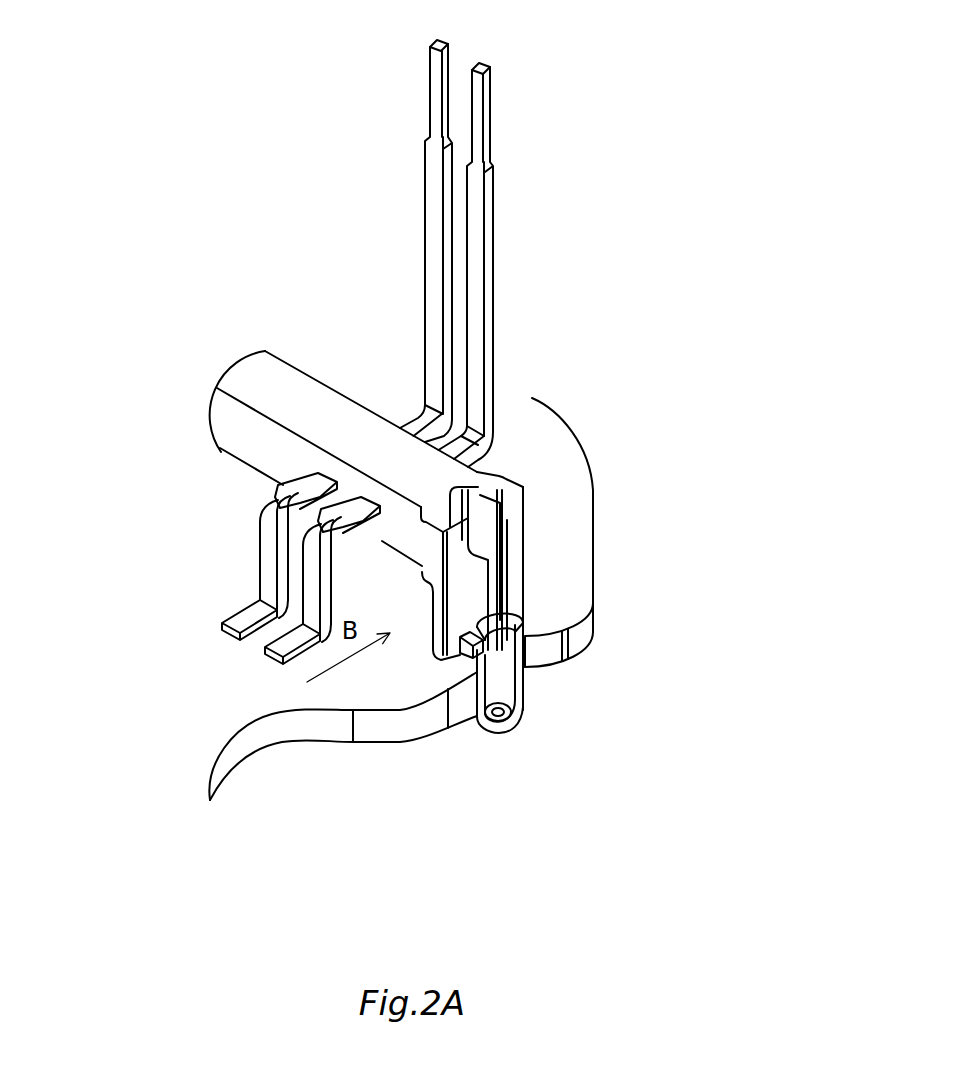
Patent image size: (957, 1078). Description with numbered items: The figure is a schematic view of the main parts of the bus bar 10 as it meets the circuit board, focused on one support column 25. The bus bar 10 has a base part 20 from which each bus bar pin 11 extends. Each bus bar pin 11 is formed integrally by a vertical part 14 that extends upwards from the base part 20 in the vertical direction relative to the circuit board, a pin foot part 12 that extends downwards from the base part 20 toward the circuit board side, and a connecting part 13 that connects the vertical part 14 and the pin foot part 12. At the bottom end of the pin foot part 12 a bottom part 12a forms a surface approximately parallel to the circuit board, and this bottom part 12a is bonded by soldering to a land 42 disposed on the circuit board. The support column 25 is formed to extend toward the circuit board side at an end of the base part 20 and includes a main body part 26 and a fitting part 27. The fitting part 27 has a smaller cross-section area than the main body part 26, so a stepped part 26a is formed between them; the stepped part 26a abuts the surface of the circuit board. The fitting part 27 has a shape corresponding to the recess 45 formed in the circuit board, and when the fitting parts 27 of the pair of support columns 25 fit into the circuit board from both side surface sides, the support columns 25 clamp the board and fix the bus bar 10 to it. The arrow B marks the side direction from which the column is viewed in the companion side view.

The bus bar 10 is at (401, 442).
The bus bar pin 11 is at (425, 178).
The pin foot part 12 is at (263, 582).
The bottom part 12a is at (265, 660).
The connecting part 13 is at (480, 433).
The vertical part 14 is at (495, 197).
The base part 20 is at (293, 372).
The support column 25 is at (551, 500).
The main body part 26 is at (518, 580).
The stepped part 26a is at (401, 745).
The fitting part 27 is at (490, 737).
The land 42 is at (278, 663).
The recess 45 is at (527, 655).